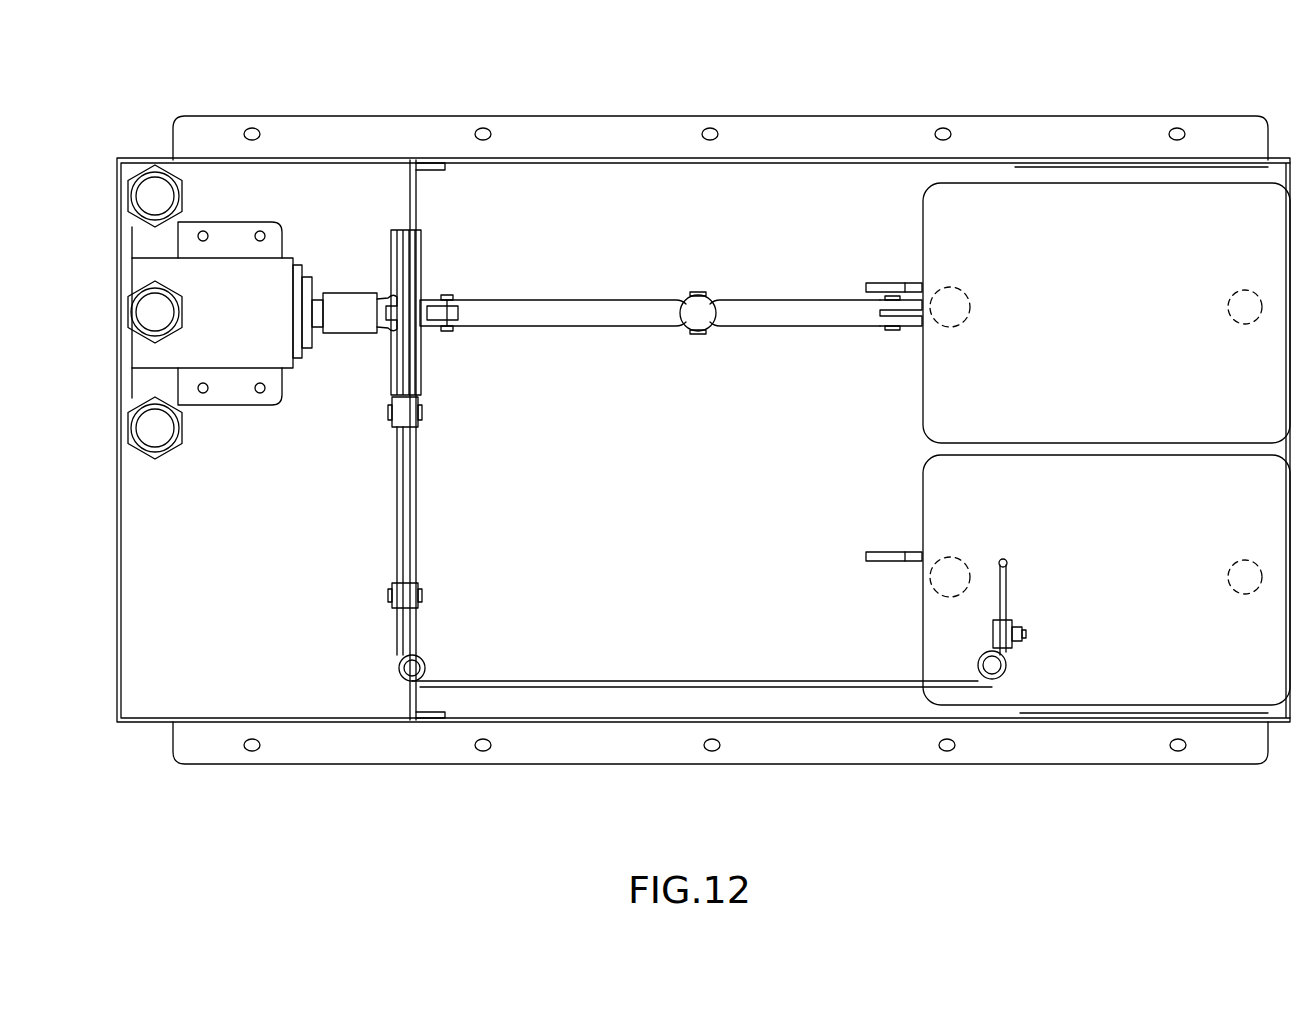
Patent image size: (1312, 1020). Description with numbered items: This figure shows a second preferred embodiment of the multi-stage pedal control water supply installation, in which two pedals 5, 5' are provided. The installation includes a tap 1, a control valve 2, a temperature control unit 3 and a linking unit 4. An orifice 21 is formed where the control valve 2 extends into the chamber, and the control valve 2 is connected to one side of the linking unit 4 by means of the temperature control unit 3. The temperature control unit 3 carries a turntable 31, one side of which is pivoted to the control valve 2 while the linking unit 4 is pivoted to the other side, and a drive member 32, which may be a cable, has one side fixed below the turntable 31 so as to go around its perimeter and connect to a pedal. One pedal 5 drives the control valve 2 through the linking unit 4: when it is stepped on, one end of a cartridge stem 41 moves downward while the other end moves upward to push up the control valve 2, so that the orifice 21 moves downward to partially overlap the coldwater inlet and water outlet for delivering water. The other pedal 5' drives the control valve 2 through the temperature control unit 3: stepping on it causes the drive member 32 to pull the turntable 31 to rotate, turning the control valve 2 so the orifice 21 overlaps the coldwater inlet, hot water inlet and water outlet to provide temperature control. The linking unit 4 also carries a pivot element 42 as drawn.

The tap 1 is at (214, 290).
The control valve 2 is at (345, 292).
The orifice 21 is at (383, 318).
The temperature control unit 3 is at (449, 196).
The turntable 31 is at (392, 228).
The drive member 32 is at (540, 680).
The linking unit 4 is at (671, 366).
The cartridge stem 41 is at (588, 320).
The pivot ring 42 is at (702, 320).
The pedal 5 is at (1106, 241).
The other pedal 5' is at (1106, 644).